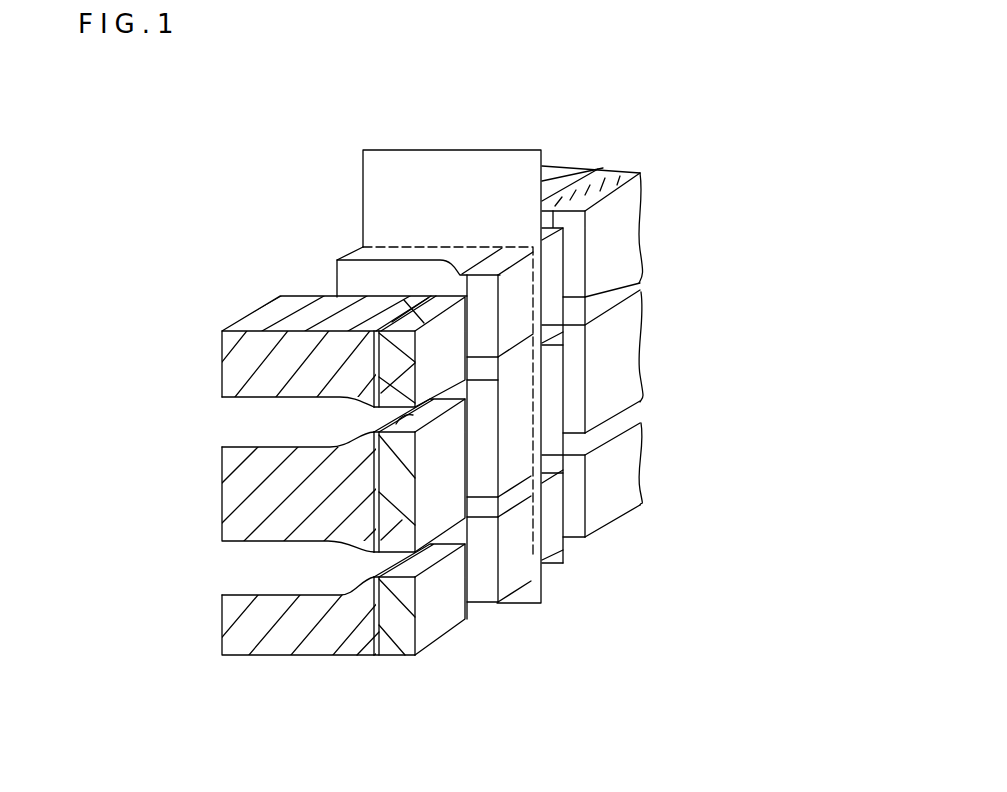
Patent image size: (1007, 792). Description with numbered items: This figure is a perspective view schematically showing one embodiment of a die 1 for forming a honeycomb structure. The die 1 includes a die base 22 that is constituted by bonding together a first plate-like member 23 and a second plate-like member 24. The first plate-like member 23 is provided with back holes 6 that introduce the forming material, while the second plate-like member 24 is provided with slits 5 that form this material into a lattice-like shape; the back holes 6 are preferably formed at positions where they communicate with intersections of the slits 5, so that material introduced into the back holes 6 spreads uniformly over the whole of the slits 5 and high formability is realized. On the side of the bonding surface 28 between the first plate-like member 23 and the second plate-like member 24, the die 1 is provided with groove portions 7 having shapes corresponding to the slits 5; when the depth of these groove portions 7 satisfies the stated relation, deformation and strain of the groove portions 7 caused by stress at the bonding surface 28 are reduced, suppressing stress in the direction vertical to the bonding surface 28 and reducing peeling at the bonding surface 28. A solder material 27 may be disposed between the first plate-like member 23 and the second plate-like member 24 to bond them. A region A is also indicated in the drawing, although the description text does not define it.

The die for forming a honeycomb structure 1 is at (773, 305).
The region / plate A is at (434, 188).
The solder material 27 is at (360, 351).
The slits 5 is at (378, 418).
The bonding surface 28 is at (373, 484).
The back holes 6 is at (277, 560).
The groove portions 7 is at (408, 552).
The die base 22 is at (327, 651).
The first plate-like member 23 is at (313, 628).
The second plate-like member 24 is at (411, 626).